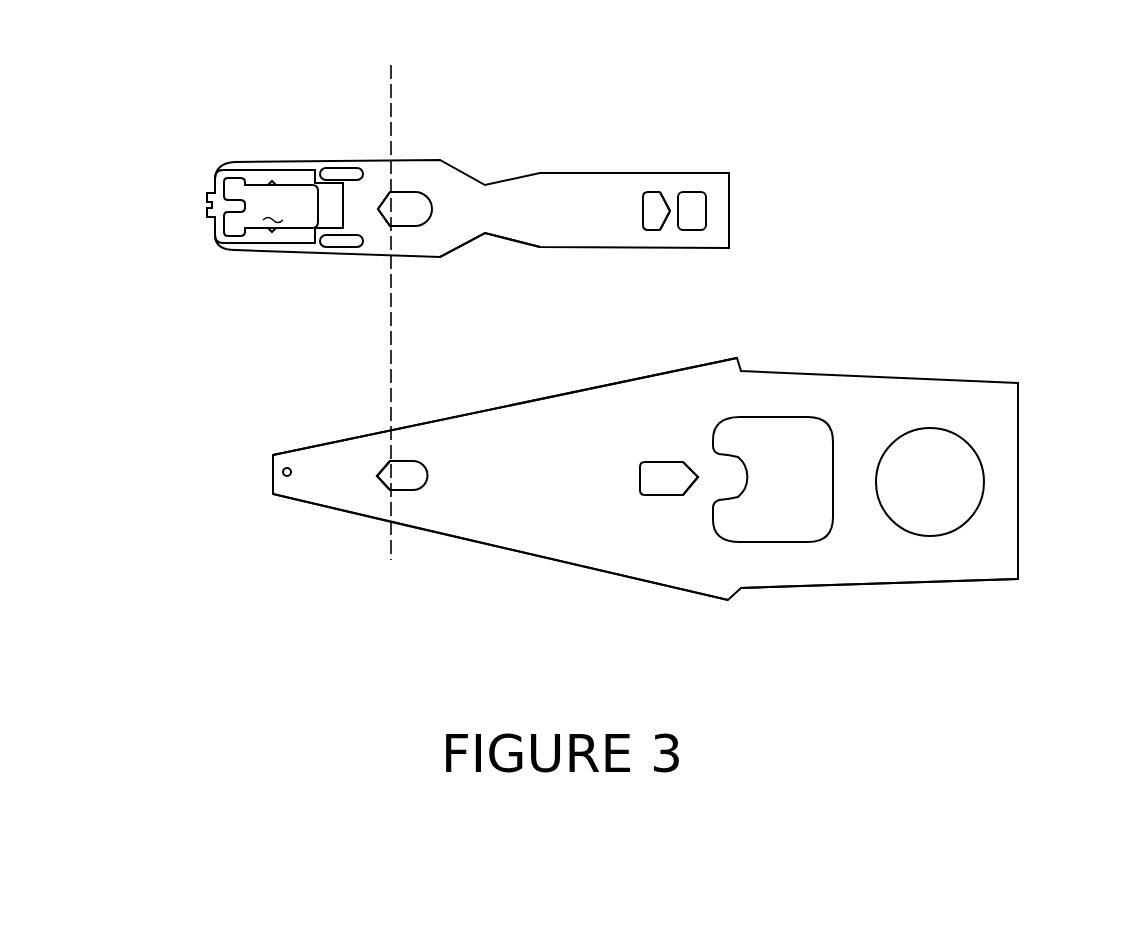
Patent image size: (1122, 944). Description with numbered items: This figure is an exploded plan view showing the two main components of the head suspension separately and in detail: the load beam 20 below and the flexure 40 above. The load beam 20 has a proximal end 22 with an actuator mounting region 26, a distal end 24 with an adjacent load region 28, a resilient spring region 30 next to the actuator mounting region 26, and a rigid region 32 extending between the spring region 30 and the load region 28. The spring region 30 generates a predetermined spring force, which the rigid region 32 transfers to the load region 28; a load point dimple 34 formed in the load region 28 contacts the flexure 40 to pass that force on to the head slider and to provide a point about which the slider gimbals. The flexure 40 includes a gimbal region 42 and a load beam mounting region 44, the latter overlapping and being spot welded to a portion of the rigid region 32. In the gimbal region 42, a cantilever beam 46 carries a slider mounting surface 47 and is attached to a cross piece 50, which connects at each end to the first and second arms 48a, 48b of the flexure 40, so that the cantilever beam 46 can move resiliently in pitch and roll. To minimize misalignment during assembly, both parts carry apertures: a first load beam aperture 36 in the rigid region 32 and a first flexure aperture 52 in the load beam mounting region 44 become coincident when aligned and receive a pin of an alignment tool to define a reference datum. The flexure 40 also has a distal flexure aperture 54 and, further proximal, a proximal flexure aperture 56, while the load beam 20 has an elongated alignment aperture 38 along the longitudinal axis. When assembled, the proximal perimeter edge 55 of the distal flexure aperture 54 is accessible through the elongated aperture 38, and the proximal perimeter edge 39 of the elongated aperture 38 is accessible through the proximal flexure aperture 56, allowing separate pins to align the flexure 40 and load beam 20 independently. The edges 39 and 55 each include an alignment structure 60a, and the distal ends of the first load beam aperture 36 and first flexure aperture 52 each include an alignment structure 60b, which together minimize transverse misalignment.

The load beam 20 is at (923, 400).
The proximal end 22 is at (1000, 398).
The distal end 24 is at (305, 447).
The actuator mounting region 26 is at (977, 560).
The load region 28 is at (310, 493).
The resilient spring region 30 is at (789, 572).
The rigid region 32 is at (473, 523).
The load point dimple 34 is at (287, 468).
The first load beam aperture 36 is at (405, 488).
The elongated alignment aperture 38 is at (660, 495).
The proximal perimeter edge 39 is at (697, 472).
The flexure 40 is at (510, 178).
The gimbal region 42 is at (248, 240).
The load beam mounting region 44 is at (512, 248).
The cantilever beam 46 is at (247, 178).
The slider mounting surface 47 is at (273, 208).
The first arm 48a is at (275, 172).
The second arm 48b is at (280, 250).
The cross piece 50 is at (215, 195).
The first flexure aperture 52 is at (412, 198).
The distal flexure aperture 54 is at (648, 195).
The proximal perimeter edge 55 is at (660, 198).
The proximal flexure aperture 56 is at (700, 198).
The alignment structure 60a is at (670, 212).
The alignment structure 60b is at (379, 210).